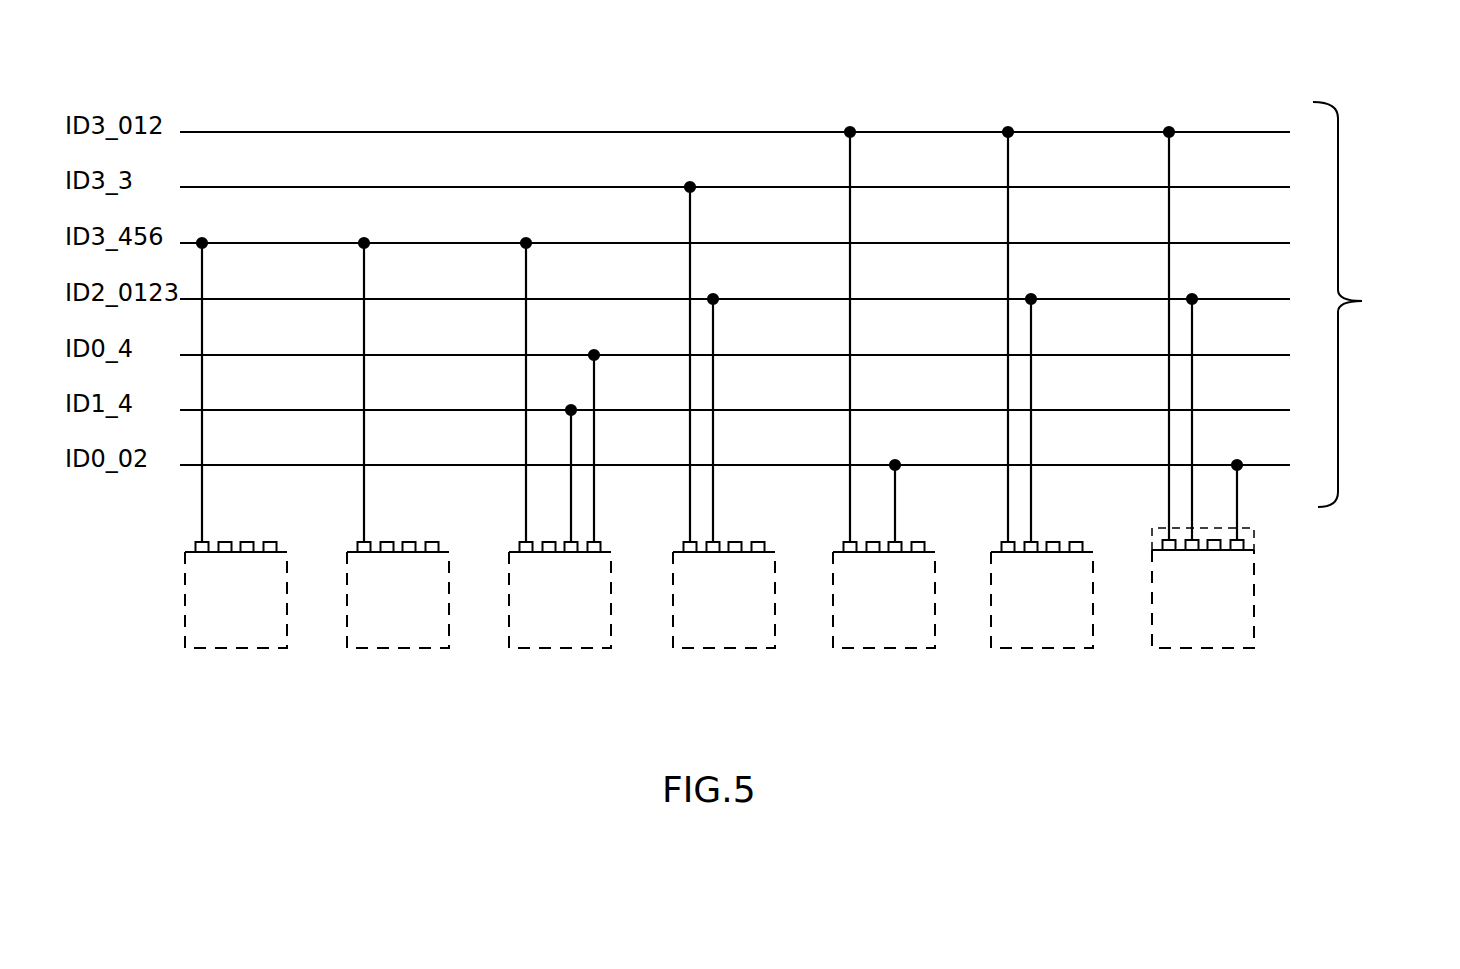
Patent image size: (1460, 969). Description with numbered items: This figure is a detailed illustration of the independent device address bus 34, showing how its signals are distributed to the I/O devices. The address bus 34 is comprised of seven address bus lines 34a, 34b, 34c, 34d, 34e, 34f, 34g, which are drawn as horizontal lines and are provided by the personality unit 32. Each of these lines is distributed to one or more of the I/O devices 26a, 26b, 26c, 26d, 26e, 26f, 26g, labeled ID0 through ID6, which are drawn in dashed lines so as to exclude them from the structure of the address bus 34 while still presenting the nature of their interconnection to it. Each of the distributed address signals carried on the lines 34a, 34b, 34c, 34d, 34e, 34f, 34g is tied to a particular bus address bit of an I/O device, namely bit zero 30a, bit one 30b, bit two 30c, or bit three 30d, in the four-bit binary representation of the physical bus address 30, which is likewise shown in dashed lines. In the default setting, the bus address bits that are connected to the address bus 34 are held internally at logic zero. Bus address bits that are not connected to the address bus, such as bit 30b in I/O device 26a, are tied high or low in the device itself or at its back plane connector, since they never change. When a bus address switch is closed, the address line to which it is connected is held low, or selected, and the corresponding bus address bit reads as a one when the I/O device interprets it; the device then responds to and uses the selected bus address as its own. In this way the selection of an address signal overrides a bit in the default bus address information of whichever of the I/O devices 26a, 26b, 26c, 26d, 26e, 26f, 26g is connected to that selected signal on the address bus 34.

The I/O device 26a is at (1188, 648).
The I/O device 26b is at (1026, 648).
The I/O device 26c is at (868, 648).
The I/O device 26d is at (708, 648).
The I/O device 26e is at (544, 648).
The I/O device 26f is at (382, 648).
The I/O device 26g is at (220, 648).
The physical bus address 30 is at (1205, 528).
The bus address bit 30a is at (1244, 547).
The bus address bit 30b is at (1220, 540).
The bus address bit 30c is at (1198, 540).
The bus address bit 30d is at (1159, 548).
The personality unit 32 is at (1379, 304).
The address bus 34 is at (735, 245).
The address bus line 34a is at (1080, 130).
The address bus line 34b is at (1080, 185).
The address bus line 34c is at (1080, 241).
The address bus line 34d is at (1080, 297).
The address bus line 34e is at (1080, 353).
The address bus line 34f is at (1080, 408).
The address bus line 34g is at (1080, 463).